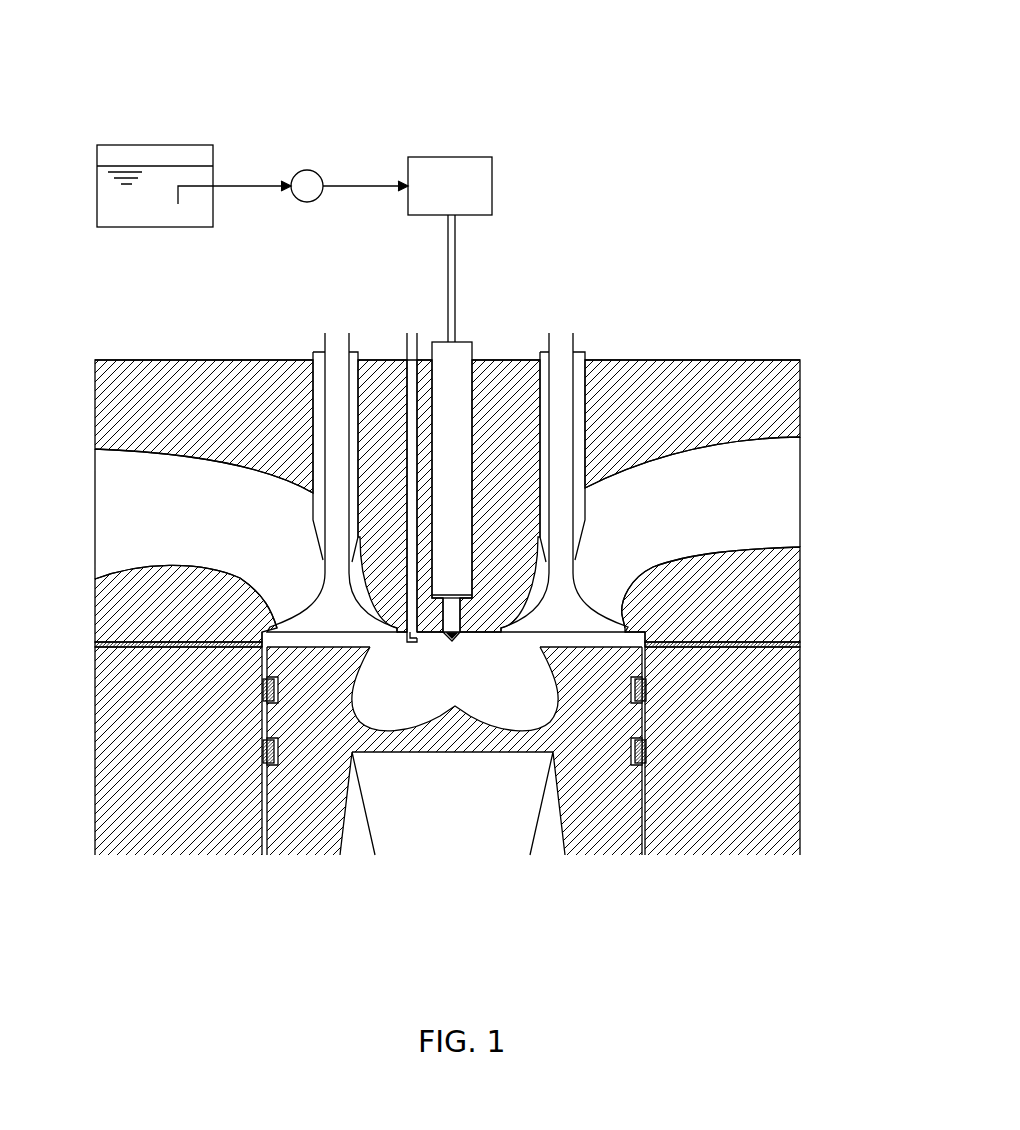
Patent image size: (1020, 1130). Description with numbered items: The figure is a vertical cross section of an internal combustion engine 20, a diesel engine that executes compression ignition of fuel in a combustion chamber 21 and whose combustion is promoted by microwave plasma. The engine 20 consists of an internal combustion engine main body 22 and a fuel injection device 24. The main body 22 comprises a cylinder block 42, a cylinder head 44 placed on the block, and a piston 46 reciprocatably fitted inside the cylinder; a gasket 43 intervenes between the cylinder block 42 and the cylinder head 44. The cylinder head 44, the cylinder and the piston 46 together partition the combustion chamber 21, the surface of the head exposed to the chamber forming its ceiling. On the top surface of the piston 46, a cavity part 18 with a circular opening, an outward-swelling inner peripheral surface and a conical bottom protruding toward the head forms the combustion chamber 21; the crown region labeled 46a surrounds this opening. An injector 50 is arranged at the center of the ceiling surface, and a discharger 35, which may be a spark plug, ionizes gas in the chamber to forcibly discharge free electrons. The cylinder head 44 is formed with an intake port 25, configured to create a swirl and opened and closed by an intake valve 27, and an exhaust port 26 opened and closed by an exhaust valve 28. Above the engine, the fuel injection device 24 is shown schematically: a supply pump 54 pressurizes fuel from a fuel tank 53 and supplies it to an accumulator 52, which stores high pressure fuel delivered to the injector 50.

The cavity part 18 is at (353, 712).
The internal combustion engine 20 is at (603, 157).
The combustion chamber 21 is at (487, 691).
The internal combustion engine main body 22 is at (740, 362).
The fuel injection device 24 is at (375, 100).
The intake port 25 is at (132, 479).
The exhaust port 26 is at (765, 490).
The intake valve 27 is at (322, 347).
The exhaust valve 28 is at (581, 350).
The discharger 35 is at (405, 338).
The cylinder block 42 is at (803, 750).
The gasket 43 is at (800, 645).
The cylinder head 44 is at (676, 358).
The piston 46 is at (341, 847).
The piston crown 46a is at (590, 648).
The injector 50 is at (441, 340).
The accumulator 52 is at (417, 157).
The fuel tank 53 is at (122, 145).
The supply pump 54 is at (300, 171).